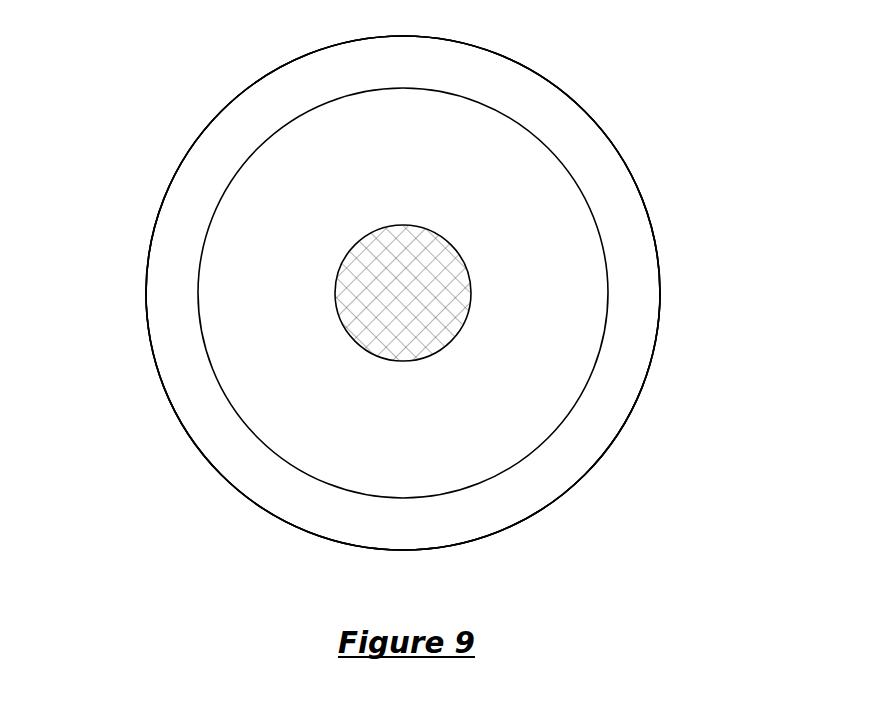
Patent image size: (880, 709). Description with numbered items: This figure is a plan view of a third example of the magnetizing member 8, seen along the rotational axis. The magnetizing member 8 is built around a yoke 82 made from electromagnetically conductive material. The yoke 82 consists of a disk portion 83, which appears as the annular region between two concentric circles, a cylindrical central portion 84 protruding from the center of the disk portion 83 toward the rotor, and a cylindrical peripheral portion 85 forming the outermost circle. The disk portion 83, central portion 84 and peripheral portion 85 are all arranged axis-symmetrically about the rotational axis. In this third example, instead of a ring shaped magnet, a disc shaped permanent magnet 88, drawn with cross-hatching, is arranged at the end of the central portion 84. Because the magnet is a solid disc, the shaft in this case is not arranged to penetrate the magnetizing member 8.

The magnetizing member 8 is at (673, 117).
The yoke 82 is at (278, 518).
The disk portion 83 is at (228, 319).
The central portion 84 is at (469, 272).
The peripheral portion 85 is at (540, 502).
The disc shaped permanent magnet 88 is at (418, 342).